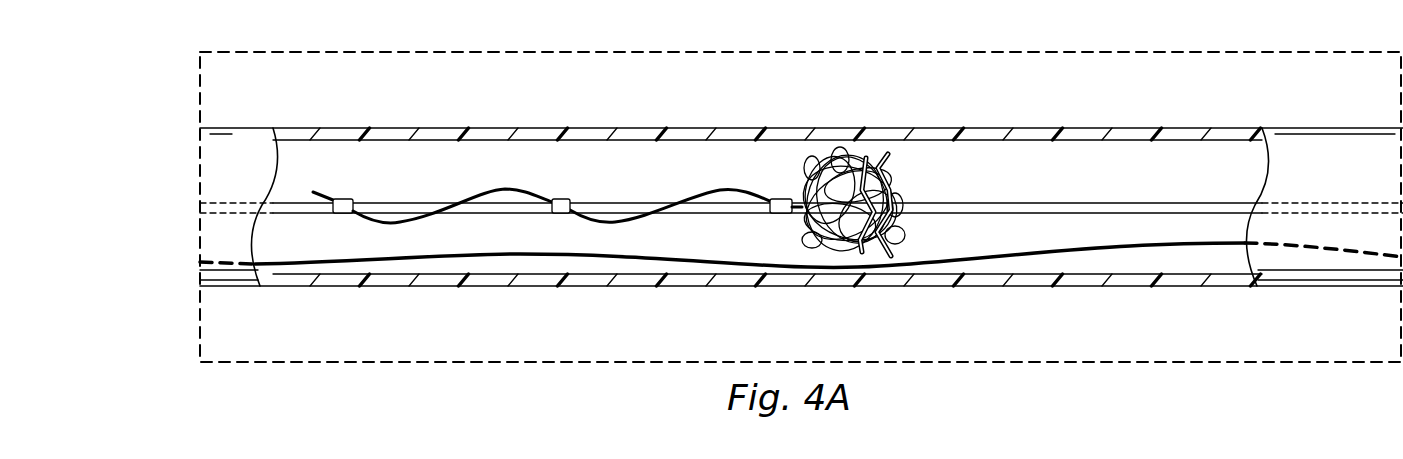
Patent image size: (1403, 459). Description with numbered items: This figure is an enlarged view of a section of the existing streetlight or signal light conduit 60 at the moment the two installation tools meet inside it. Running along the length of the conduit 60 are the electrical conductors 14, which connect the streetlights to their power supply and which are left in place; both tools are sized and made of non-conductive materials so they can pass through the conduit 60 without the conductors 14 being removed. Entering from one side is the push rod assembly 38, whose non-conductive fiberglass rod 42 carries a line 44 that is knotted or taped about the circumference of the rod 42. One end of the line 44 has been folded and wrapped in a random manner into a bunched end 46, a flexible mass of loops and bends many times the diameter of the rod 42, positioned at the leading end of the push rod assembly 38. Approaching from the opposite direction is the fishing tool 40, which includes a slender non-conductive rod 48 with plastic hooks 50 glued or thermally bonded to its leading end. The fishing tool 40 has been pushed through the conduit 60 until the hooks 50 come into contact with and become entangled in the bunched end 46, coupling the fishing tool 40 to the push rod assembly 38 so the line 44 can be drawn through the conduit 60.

The electrical conductors 14 is at (977, 258).
The push rod assembly 38 is at (557, 200).
The fishing tool 40 is at (1136, 187).
The rod 42 is at (410, 200).
The line 44 is at (495, 186).
The bunched end 46 is at (784, 228).
The rod 48 is at (1037, 200).
The hooks 50 is at (893, 157).
The conduit 60 is at (685, 128).